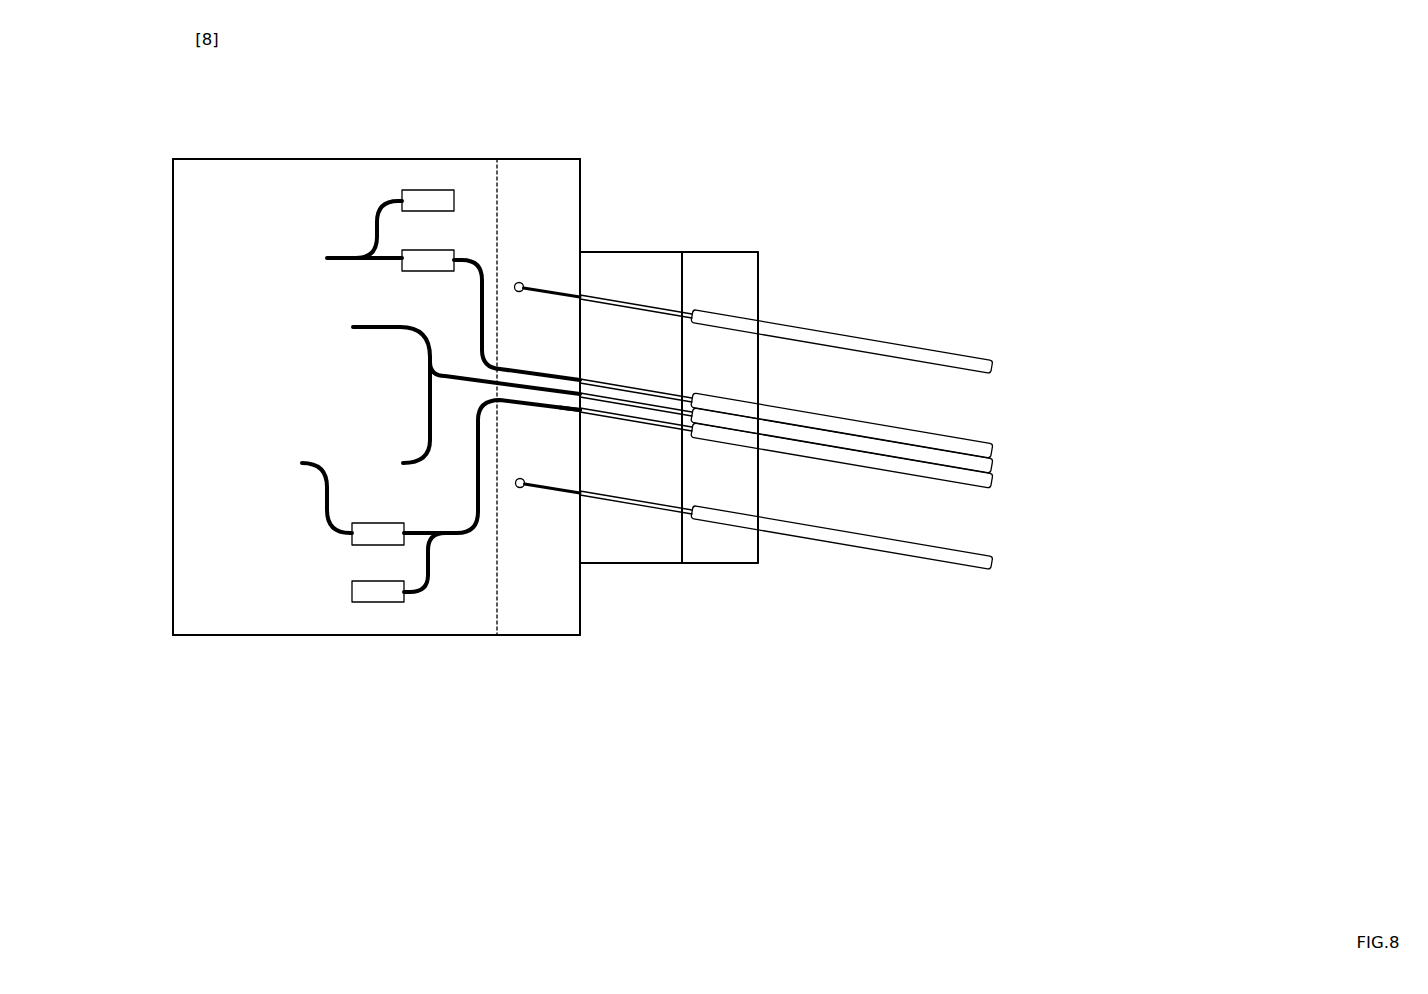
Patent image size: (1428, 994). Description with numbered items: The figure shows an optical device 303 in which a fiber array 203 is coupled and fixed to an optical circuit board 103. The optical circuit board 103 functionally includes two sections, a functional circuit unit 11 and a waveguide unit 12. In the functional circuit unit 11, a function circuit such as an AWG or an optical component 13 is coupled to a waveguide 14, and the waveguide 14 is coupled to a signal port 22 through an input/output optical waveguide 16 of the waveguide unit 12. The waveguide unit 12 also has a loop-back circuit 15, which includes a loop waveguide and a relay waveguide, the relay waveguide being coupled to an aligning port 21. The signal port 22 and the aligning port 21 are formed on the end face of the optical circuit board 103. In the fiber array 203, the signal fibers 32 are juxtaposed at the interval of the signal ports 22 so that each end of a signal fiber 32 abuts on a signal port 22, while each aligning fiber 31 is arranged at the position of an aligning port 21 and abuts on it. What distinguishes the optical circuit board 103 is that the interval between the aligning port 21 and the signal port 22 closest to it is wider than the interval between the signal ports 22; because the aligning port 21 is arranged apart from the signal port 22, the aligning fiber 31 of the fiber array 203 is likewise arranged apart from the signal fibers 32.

The functional circuit unit 11 is at (347, 157).
The waveguide unit 12 is at (537, 157).
The optical component 13 is at (418, 190).
The waveguide 14 is at (331, 259).
The loop-back circuit 15 is at (520, 284).
The input/output optical waveguide 16 is at (541, 417).
The aligning port 21 is at (575, 288).
The signal port 22 is at (577, 415).
The aligning fiber 31 is at (898, 343).
The signal fiber 32 is at (993, 440).
The optical circuit board 103 is at (430, 155).
The fiber array 203 is at (655, 250).
The optical device 303 is at (635, 125).